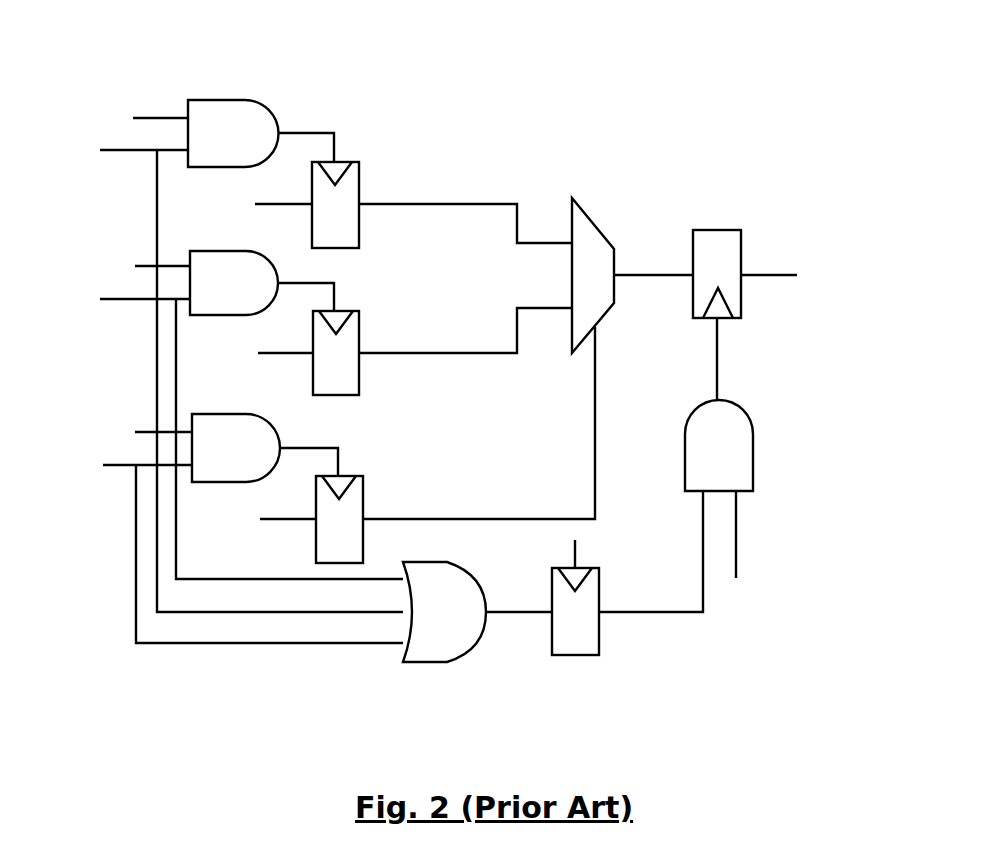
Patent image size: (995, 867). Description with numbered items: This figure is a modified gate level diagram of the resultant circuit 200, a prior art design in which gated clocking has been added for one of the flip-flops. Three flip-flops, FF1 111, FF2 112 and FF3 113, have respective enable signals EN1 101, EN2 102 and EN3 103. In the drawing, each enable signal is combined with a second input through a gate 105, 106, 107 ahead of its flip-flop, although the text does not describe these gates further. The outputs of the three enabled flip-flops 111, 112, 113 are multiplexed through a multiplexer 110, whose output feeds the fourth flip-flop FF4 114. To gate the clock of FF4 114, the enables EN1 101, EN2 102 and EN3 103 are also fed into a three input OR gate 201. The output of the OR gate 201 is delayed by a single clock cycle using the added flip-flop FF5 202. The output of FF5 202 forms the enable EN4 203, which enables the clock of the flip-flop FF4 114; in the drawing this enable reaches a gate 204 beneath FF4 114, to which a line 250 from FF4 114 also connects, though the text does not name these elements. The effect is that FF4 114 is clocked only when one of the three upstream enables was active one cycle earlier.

The resultant circuit 200 is at (563, 106).
The enable signal EN1 101 is at (68, 139).
The enable signal EN2 102 is at (68, 288).
The enable signal EN3 103 is at (68, 452).
The first AND gate 105 is at (233, 100).
The second AND gate 106 is at (269, 256).
The third AND gate 107 is at (270, 419).
The multiplexer 110 is at (593, 222).
The flip-flop FF1 111 is at (357, 162).
The flip-flop FF2 112 is at (355, 311).
The flip-flop FF3 113 is at (361, 476).
The flip-flop FF4 114 is at (740, 230).
The output line of fourth flip-flop 250 is at (720, 362).
The fourth AND gate 204 is at (753, 437).
The three input OR gate 201 is at (467, 590).
The flip-flop FF5 202 is at (599, 655).
The enable EN4 203 is at (698, 645).